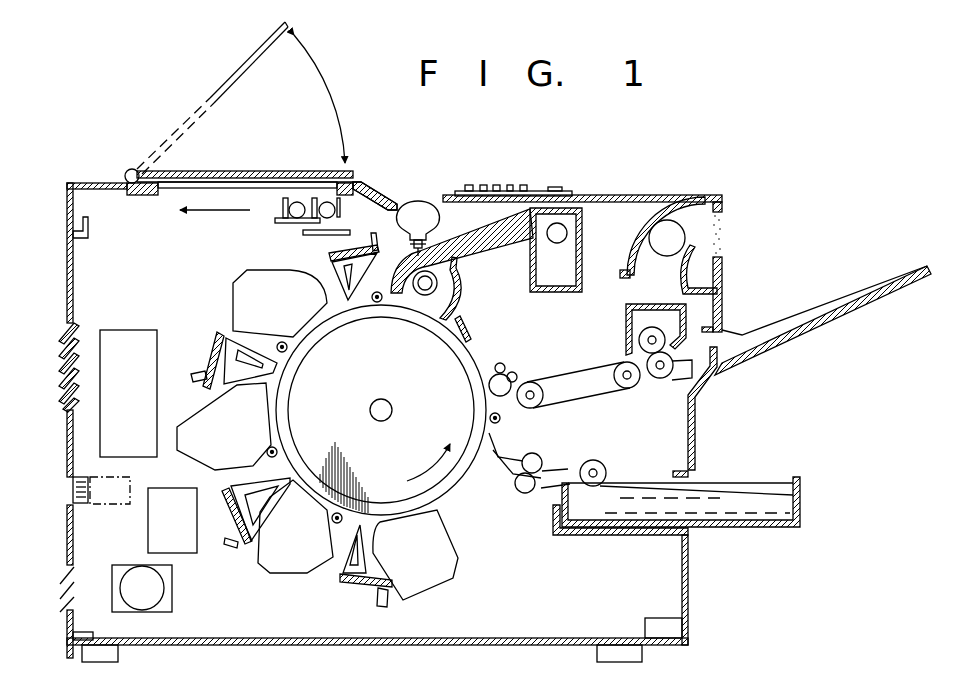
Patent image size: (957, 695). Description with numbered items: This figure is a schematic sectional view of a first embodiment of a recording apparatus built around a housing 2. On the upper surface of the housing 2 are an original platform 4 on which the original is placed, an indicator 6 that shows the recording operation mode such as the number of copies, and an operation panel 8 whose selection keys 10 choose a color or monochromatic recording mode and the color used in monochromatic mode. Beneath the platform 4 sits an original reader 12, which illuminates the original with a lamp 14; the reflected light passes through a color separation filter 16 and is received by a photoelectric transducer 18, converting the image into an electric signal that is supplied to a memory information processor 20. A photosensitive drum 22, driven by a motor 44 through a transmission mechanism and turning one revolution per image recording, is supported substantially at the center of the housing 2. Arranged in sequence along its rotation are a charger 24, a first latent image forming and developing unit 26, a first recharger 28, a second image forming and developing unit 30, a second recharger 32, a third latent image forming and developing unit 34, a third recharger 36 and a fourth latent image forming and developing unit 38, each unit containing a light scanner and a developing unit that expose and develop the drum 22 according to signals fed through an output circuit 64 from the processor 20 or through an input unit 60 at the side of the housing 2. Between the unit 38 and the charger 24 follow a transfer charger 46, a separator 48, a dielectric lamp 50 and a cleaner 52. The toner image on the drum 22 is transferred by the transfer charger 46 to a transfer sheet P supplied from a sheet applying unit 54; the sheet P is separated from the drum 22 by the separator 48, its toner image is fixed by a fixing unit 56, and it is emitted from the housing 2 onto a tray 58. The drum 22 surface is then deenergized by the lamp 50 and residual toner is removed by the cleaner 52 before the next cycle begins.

The housing 2 is at (698, 194).
The original platform 4 is at (202, 180).
The indicator 6 is at (413, 210).
The operation panel 8 is at (541, 189).
The selection keys 10 is at (484, 189).
The original reader 12 is at (350, 208).
The lamp 14 is at (322, 201).
The color separation filter 16 is at (275, 221).
The photoelectric transducer 18 is at (349, 231).
The memory information processor 20 is at (135, 336).
The photosensitive drum 22 is at (473, 348).
The charger 24 is at (377, 291).
The first latent image forming and developing unit 26 is at (275, 292).
The first recharger 28 is at (280, 341).
The second image forming and developing unit 30 is at (220, 383).
The second recharger 32 is at (266, 452).
The third latent image forming and developing unit 34 is at (271, 545).
The third recharger 36 is at (332, 522).
The fourth latent image forming and developing unit 38 is at (423, 568).
The motor 44 is at (152, 596).
The transfer charger 46 is at (505, 419).
The separator 48 is at (514, 368).
The dielectric lamp 50 is at (463, 326).
The cleaner 52 is at (460, 280).
The sheet applying unit 54 is at (770, 529).
The fixing unit 56 is at (657, 308).
The tray 58 is at (814, 334).
The input unit 60 is at (72, 490).
The output circuit 64 is at (148, 520).
The transfer sheet P is at (720, 496).